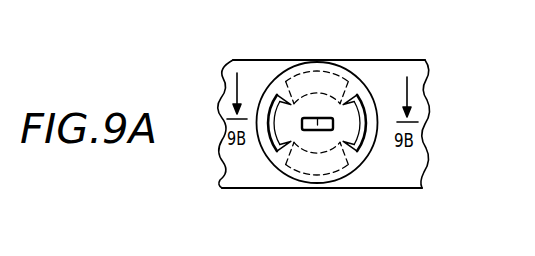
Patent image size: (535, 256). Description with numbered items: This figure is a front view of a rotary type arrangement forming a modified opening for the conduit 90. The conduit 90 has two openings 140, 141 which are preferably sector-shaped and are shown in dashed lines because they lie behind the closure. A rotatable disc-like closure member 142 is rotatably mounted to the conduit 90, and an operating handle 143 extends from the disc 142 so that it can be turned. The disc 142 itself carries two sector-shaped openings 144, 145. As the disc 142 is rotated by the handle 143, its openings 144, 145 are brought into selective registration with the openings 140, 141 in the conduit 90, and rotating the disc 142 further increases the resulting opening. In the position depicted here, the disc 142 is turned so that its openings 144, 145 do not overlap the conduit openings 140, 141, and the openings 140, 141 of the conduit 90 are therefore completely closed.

The conduit 90 is at (413, 60).
The sector-shaped opening 140 is at (327, 80).
The sector-shaped opening 141 is at (333, 183).
The rotatable disc-like closure member 142 is at (292, 72).
The operating handle 143 is at (310, 128).
The sector-shaped opening 144 is at (272, 143).
The sector-shaped opening 145 is at (358, 115).